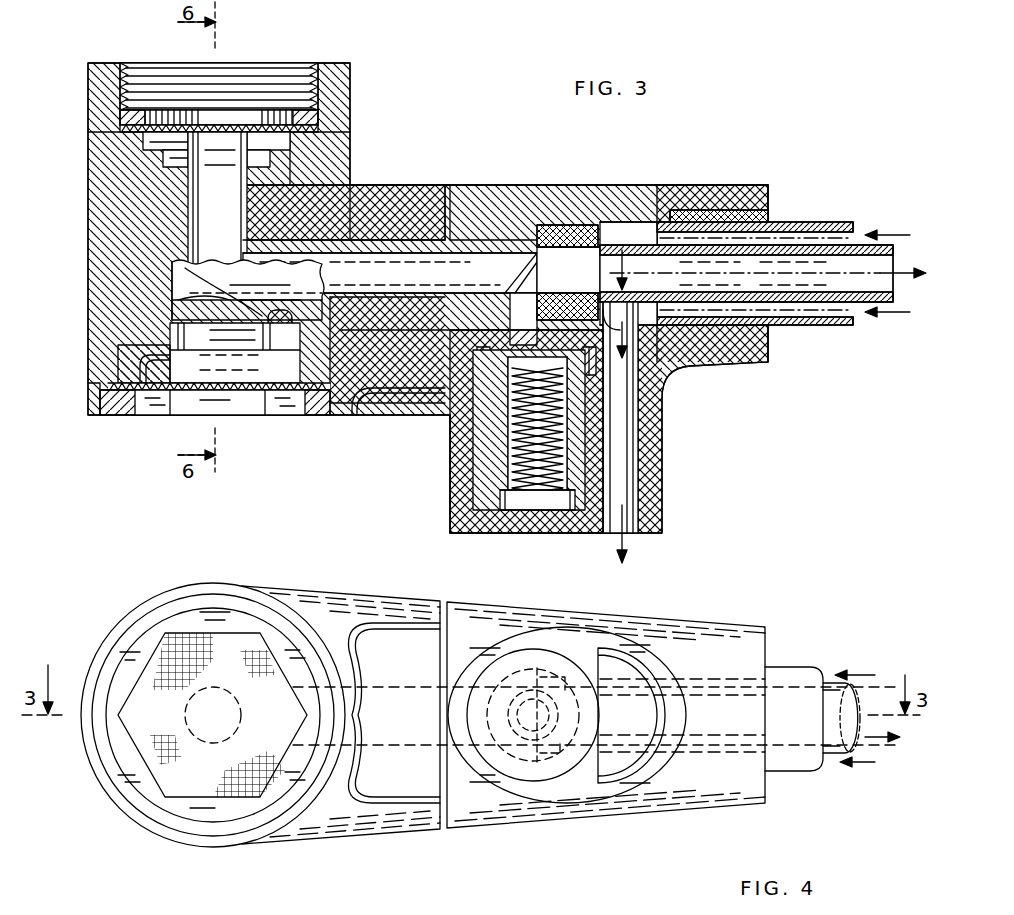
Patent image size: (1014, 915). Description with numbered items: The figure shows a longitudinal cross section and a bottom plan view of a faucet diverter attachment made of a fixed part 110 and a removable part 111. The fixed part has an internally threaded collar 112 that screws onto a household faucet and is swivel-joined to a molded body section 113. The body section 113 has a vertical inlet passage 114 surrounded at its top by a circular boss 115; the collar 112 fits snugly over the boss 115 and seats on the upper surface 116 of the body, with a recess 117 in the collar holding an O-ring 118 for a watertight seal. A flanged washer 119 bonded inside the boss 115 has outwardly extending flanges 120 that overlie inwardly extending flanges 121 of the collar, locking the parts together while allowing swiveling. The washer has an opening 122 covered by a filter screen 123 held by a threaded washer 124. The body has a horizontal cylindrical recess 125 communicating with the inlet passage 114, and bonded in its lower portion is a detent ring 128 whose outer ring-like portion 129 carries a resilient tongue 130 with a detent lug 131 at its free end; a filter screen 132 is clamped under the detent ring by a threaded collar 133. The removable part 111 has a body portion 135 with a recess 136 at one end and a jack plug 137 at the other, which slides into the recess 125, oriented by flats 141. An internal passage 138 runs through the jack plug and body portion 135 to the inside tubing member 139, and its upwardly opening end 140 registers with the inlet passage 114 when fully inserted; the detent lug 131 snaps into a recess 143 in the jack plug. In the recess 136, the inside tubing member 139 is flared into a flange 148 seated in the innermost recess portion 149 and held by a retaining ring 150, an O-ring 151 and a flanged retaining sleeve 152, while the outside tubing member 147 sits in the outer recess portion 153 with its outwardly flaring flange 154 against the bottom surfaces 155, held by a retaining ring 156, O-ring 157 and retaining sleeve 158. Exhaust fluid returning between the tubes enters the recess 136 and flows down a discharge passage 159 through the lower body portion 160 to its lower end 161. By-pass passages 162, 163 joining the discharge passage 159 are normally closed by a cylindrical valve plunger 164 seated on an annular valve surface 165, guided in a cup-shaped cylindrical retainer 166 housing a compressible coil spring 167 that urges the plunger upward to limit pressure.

In FIG. 3, the fixed part 110 is at (410, 176).
In FIG. 4, the fixed part 110 is at (328, 574).
In FIG. 3, the removable part 111 is at (613, 175).
In FIG. 4, the removable part 111 is at (758, 605).
In FIG. 3, the internally threaded collar 112 is at (340, 93).
In FIG. 3, the body section 113 is at (452, 186).
In FIG. 3, the inlet passage 114 is at (192, 203).
In FIG. 4, the inlet passage 114 is at (242, 715).
In FIG. 3, the circular boss 115 is at (170, 164).
In FIG. 3, the upper surface 116 is at (298, 158).
In FIG. 3, the recess 117 is at (303, 188).
In FIG. 3, the O-ring 118 is at (270, 178).
In FIG. 3, the flanged washer 119 is at (258, 147).
In FIG. 3, the outwardly extending flanges 120 is at (143, 137).
In FIG. 3, the inwardly extending flanges 121 is at (165, 157).
In FIG. 3, the opening 122 is at (224, 148).
In FIG. 3, the filter screen 123 is at (163, 117).
In FIG. 3, the threaded washer 124 is at (320, 128).
In FIG. 3, the horizontal cylindrical recess 125 is at (352, 330).
In FIG. 3, the detent ring 128 is at (118, 362).
In FIG. 3, the outer ring-like portion 129 is at (313, 365).
In FIG. 3, the resilient tongue 130 is at (228, 338).
In FIG. 3, the detent lug 131 is at (279, 312).
In FIG. 3, the filter screen 132 is at (157, 393).
In FIG. 4, the filter screen 132 is at (160, 660).
In FIG. 3, the threaded collar 133 is at (342, 405).
In FIG. 4, the threaded collar 133 is at (210, 812).
In FIG. 3, the body portion 135 is at (533, 200).
In FIG. 3, the recess 136 is at (618, 228).
In FIG. 3, the jack plug 137 is at (367, 238).
In FIG. 3, the internal passage 138 is at (390, 266).
In FIG. 3, the inside tubing member 139 is at (788, 255).
In FIG. 4, the inside tubing member 139 is at (847, 713).
In FIG. 3, the upwardly opening end 140 is at (196, 240).
In FIG. 3, the flats 141 is at (227, 302).
In FIG. 3, the recess 143 is at (200, 298).
In FIG. 3, the outside tubing member 147 is at (840, 323).
In FIG. 4, the outside tubing member 147 is at (796, 668).
In FIG. 3, the flange 148 is at (530, 310).
In FIG. 3, the innermost recess portion 149 is at (561, 224).
In FIG. 3, the retaining ring 150 is at (567, 247).
In FIG. 3, the O-ring 151 is at (592, 300).
In FIG. 3, the flanged retaining sleeve 152 is at (623, 298).
In FIG. 3, the outer recess portion 153 is at (762, 200).
In FIG. 3, the outwardly flaring flange 154 is at (673, 313).
In FIG. 3, the bottom surfaces 155 is at (612, 345).
In FIG. 3, the retaining ring 156 is at (680, 213).
In FIG. 3, the O-ring 157 is at (717, 210).
In FIG. 3, the retaining sleeve 158 is at (770, 333).
In FIG. 3, the discharge passage 159 is at (622, 447).
In FIG. 4, the discharge passage 159 is at (618, 668).
In FIG. 3, the lower body portion 160 is at (632, 517).
In FIG. 3, the lower end 161 is at (455, 485).
In FIG. 4, the lower end 161 is at (648, 636).
In FIG. 3, the by-pass passage 162 is at (515, 290).
In FIG. 3, the by-pass passage 163 is at (657, 402).
In FIG. 3, the cylindrical valve plunger 164 is at (497, 437).
In FIG. 3, the annular valve surface 165 is at (483, 390).
In FIG. 3, the cup-shaped cylindrical retainer 166 is at (506, 522).
In FIG. 4, the cup-shaped cylindrical retainer 166 is at (552, 772).
In FIG. 3, the compressible coil spring 167 is at (540, 495).